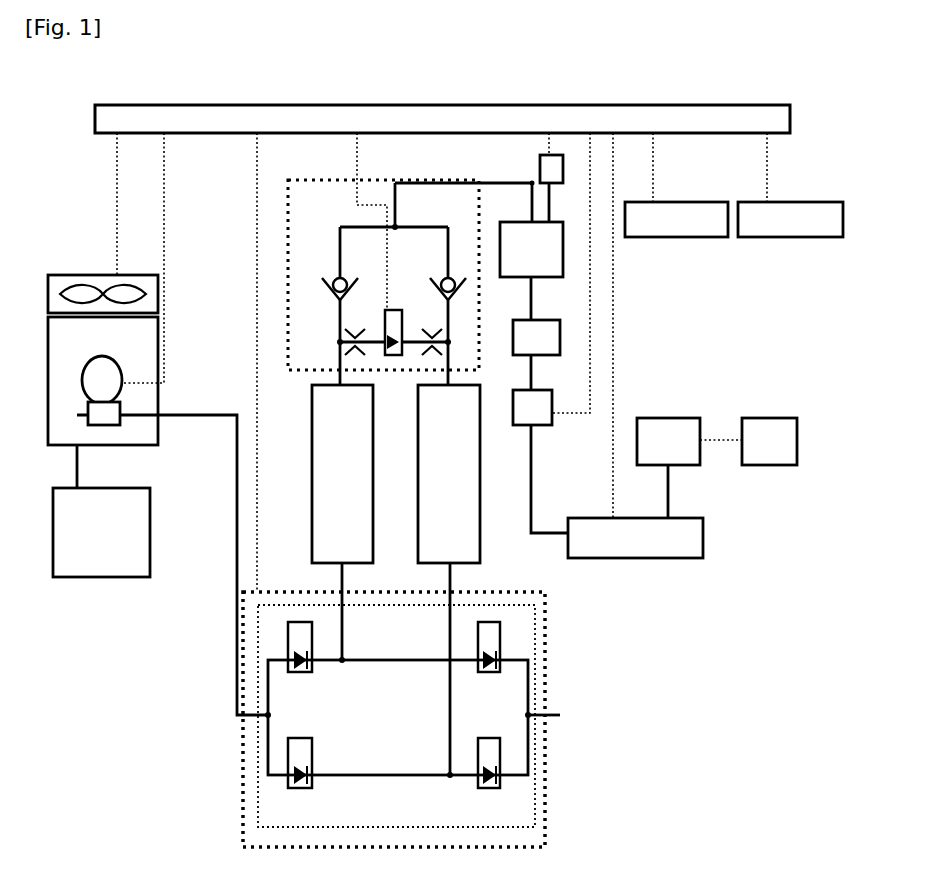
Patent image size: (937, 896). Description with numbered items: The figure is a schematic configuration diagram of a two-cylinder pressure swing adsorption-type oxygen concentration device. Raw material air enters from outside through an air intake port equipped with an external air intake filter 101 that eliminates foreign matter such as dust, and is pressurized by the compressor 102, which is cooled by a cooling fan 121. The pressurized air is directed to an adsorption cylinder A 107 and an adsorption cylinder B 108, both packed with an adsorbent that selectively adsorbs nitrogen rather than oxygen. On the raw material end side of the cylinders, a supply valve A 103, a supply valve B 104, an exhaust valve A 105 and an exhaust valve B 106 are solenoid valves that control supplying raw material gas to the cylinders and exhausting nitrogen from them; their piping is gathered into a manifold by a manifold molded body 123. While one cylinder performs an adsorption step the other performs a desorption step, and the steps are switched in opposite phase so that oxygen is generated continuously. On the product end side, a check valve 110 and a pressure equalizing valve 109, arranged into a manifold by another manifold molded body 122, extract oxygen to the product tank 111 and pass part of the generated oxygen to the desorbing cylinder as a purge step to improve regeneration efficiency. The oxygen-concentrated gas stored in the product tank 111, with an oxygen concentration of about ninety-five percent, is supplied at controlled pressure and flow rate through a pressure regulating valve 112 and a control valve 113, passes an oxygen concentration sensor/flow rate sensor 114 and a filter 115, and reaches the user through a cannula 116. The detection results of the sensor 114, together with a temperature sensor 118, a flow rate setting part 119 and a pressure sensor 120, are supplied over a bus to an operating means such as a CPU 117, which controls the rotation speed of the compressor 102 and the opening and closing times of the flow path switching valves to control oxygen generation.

The external air intake filter 101 is at (101, 511).
The compressor 102 is at (158, 516).
The supply valve A 103 is at (307, 662).
The supply valve B 104 is at (310, 777).
The exhaust valve A 105 is at (493, 662).
The exhaust valve B 106 is at (493, 777).
The adsorption cylinder A 107 is at (342, 522).
The adsorption cylinder B 108 is at (449, 580).
The pressure equalizing valve 109 is at (412, 332).
The check valve 110 is at (394, 276).
The product tank 111 is at (531, 271).
The pressure regulating valve 112 is at (536, 355).
The control valve 113 is at (545, 461).
The oxygen concentration sensor/flow rate sensor 114 is at (635, 538).
The filter 115 is at (668, 468).
The cannula 116 is at (769, 441).
The CPU 117 is at (442, 119).
The temperature sensor 118 is at (676, 219).
The flow rate setting part 119 is at (790, 219).
The pressure sensor 120 is at (529, 169).
The cooling fan 121 is at (103, 278).
The manifold molded body 122 is at (376, 263).
The manifold molded body 123 is at (433, 850).